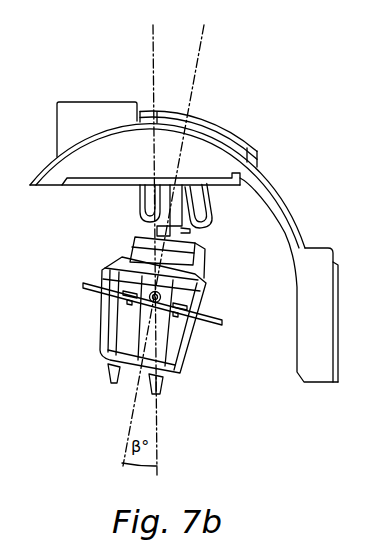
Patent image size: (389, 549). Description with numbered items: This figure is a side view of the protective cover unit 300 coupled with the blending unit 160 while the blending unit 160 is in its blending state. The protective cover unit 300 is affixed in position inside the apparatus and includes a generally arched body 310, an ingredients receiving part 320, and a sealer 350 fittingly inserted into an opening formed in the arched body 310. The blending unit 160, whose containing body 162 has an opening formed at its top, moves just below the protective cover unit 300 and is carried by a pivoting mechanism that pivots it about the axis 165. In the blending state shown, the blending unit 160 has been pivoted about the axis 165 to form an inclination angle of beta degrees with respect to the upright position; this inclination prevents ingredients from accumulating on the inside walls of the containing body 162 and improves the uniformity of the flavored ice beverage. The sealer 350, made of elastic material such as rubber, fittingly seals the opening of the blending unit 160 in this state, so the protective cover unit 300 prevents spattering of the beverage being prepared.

The blending unit 160 is at (107, 262).
The containing body 162 is at (207, 219).
The axis 165 is at (158, 302).
The protective cover unit 300 is at (265, 163).
The arched body 310 is at (290, 200).
The ingredients receiving part 320 is at (58, 127).
The sealer 350 is at (213, 133).